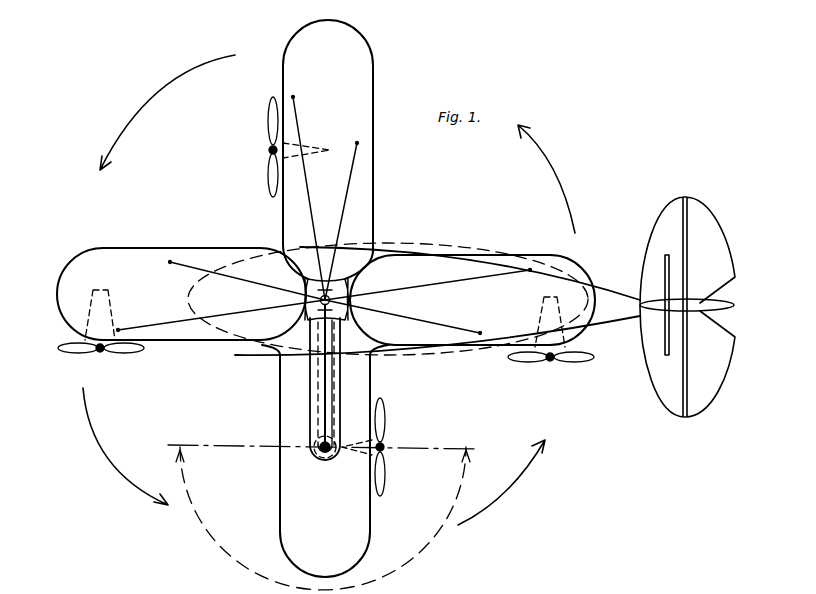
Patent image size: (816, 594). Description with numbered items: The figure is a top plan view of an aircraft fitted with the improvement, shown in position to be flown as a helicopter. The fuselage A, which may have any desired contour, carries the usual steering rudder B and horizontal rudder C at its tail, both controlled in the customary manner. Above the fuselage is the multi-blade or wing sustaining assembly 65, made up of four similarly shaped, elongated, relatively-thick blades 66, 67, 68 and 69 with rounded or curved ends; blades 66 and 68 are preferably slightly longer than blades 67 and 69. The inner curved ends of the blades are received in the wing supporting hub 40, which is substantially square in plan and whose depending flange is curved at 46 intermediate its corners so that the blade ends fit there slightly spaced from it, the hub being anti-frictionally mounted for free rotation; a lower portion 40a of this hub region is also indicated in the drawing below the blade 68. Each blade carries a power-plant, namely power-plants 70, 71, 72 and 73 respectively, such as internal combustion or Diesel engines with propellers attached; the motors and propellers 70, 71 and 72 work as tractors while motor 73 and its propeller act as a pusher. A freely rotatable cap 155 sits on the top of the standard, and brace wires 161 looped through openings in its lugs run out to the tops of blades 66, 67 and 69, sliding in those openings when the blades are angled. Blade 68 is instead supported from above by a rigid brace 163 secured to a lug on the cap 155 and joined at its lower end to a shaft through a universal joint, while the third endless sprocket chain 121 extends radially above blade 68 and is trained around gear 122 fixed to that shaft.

The blade 66 is at (313, 42).
The wing sustaining assembly 65 is at (389, 200).
The blade 67 is at (188, 320).
The blade 69 is at (573, 270).
The blade 68 is at (293, 497).
The power-plant 70 is at (270, 150).
The power-plant 71 is at (92, 343).
The power-plant 72 is at (385, 440).
The power-plant 73 is at (545, 362).
The wing supporting hub 40 is at (305, 283).
The lower pivot 40a is at (312, 428).
The curved portion of flange 46 is at (350, 283).
The brace wires 161 is at (250, 285).
The rigid brace 163 is at (322, 368).
The third endless sprocket chain 121 is at (315, 392).
The gear 122 is at (308, 452).
The freely rotatable cap 155 is at (330, 262).
The fuselage A is at (428, 245).
The steering rudder B is at (733, 306).
The horizontal rudder C is at (660, 385).